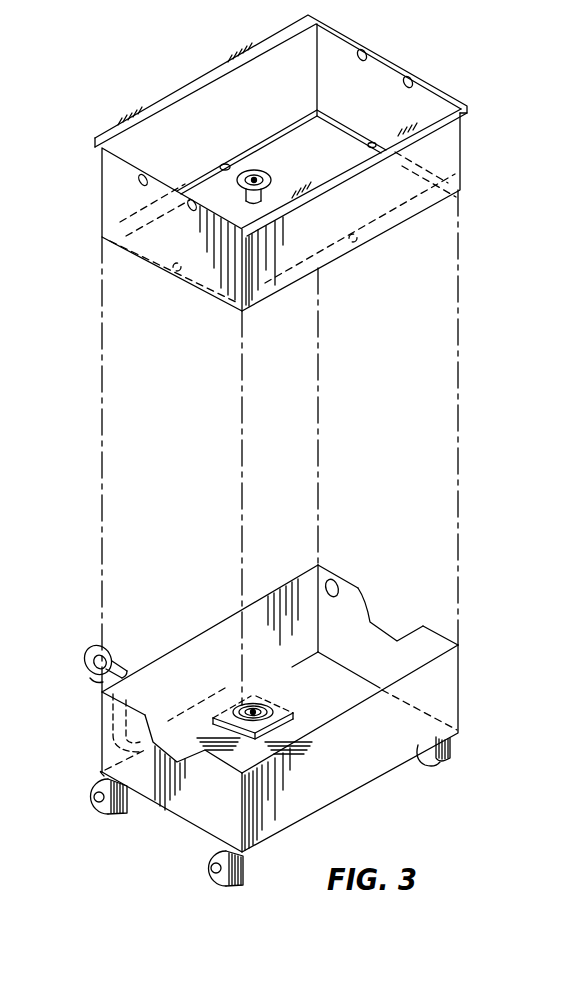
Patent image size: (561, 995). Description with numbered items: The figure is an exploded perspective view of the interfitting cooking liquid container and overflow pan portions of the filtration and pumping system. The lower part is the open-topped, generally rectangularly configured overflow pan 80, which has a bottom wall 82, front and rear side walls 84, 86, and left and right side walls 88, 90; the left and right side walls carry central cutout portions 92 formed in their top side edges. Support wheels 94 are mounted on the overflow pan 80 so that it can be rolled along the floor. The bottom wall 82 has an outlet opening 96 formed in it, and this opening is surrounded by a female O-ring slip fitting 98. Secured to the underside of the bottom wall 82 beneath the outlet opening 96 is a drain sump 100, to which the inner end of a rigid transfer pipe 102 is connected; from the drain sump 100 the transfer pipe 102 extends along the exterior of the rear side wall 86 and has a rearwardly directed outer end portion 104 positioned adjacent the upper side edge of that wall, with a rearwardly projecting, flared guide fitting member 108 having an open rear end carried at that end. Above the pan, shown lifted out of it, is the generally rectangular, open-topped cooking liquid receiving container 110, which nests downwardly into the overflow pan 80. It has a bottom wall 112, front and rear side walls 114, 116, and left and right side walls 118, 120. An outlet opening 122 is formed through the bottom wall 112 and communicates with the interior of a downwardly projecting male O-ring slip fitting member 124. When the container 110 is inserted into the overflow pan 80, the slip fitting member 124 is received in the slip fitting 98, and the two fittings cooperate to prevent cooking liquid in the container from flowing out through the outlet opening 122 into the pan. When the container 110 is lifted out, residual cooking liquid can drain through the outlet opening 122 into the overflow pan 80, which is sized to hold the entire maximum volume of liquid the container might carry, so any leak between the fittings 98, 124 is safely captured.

The overflow pan 80 is at (464, 705).
The bottom wall 82 is at (325, 675).
The front side wall 84 is at (357, 763).
The rear side wall 86 is at (203, 648).
The left side wall 88 is at (215, 810).
The right side wall 90 is at (433, 650).
The central cutout portions 92 is at (387, 632).
The support wheels 94 is at (107, 822).
The outlet opening 96 is at (254, 711).
The female O-ring slip fitting 98 is at (270, 709).
The drain sump 100 is at (292, 716).
The rigid transfer pipe 102 is at (160, 718).
The outer end portion 104 is at (120, 662).
The flared guide fitting member 108 is at (95, 683).
The cooking liquid receiving container 110 is at (466, 151).
The bottom wall 112 is at (322, 142).
The front side wall 114 is at (382, 203).
The rear side wall 116 is at (187, 110).
The left side wall 118 is at (203, 260).
The right side wall 120 is at (423, 108).
The outlet opening 122 is at (255, 176).
The male O-ring slip fitting member 124 is at (270, 193).